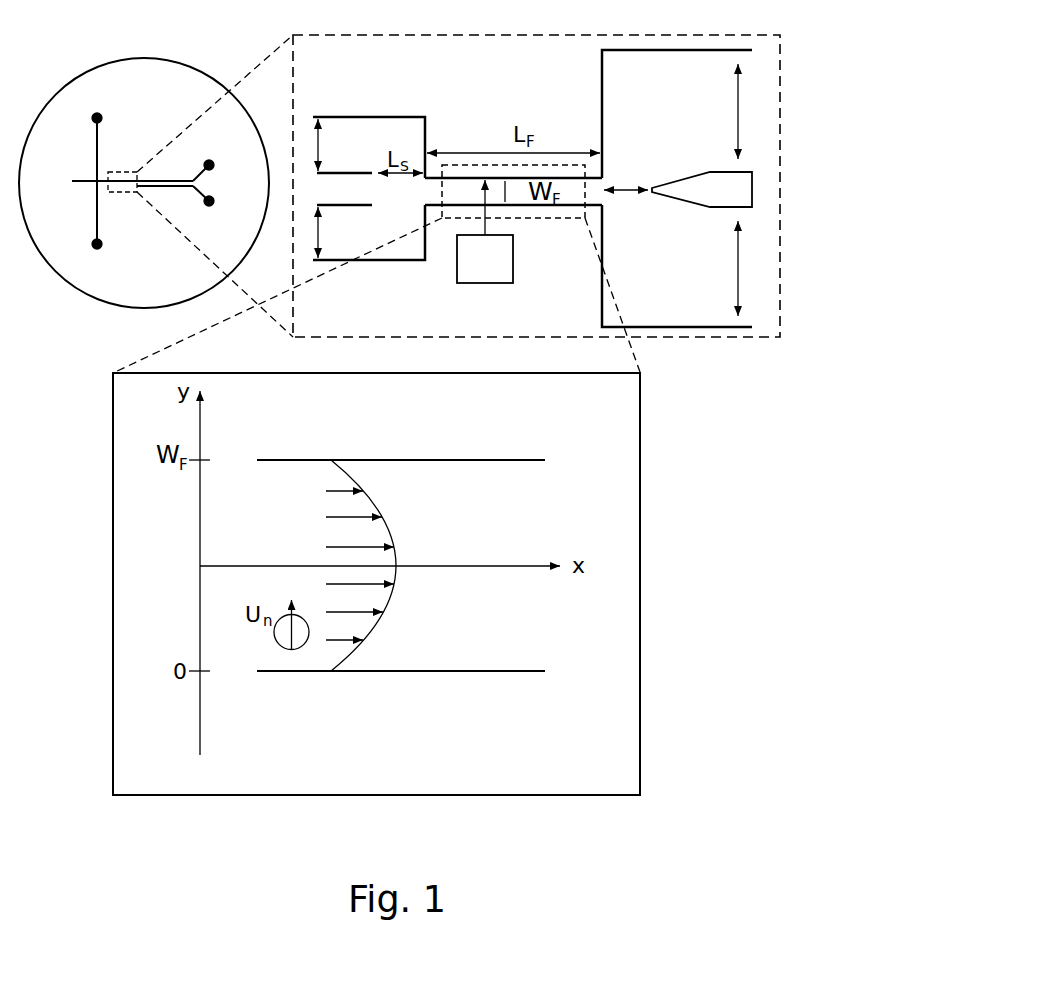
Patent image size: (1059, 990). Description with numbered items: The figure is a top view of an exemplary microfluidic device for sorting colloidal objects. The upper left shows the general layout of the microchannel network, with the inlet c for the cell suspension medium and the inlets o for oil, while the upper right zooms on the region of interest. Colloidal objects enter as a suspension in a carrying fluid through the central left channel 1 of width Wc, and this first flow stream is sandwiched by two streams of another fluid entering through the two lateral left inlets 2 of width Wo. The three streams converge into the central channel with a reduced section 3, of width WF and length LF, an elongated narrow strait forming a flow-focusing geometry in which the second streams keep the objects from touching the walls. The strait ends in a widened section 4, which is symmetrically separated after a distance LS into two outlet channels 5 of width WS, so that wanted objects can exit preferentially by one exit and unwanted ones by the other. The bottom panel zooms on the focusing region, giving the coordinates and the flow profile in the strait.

The central left channel 1 is at (465, 191).
The lateral left inlets 2 is at (369, 188).
The central channel with reduced section 3 is at (485, 231).
The widened section 4 is at (677, 188).
The outlets 5 is at (144, 183).